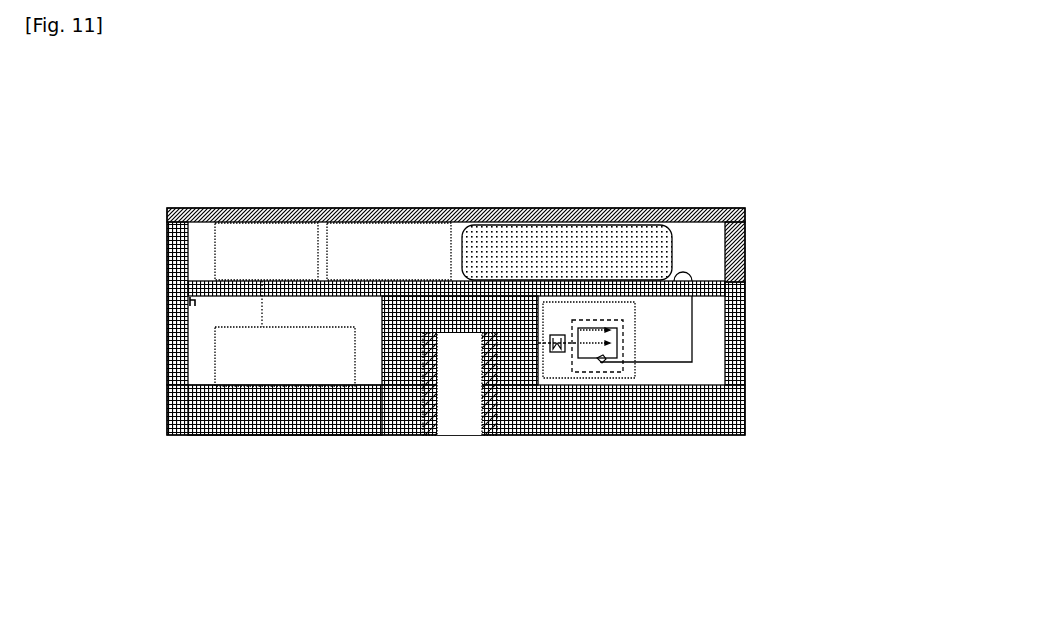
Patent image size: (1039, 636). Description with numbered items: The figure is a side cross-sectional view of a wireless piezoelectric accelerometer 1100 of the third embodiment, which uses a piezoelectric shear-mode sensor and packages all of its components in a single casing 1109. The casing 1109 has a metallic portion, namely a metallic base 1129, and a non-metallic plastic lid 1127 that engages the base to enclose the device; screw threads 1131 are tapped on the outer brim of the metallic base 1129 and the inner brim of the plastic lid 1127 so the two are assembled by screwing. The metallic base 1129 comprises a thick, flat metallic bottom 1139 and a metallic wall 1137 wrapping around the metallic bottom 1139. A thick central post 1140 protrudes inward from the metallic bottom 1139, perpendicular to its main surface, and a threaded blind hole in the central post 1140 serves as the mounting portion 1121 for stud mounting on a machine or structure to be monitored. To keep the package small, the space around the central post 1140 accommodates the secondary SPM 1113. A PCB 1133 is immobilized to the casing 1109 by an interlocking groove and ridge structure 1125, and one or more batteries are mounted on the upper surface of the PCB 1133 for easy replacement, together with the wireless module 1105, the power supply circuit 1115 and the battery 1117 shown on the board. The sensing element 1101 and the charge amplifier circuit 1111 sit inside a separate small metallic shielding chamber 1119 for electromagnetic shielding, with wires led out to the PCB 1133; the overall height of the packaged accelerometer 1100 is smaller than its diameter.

The wireless piezoelectric accelerometer 1100 is at (440, 613).
The casing 1109 is at (554, 252).
The plastic lid 1127 is at (170, 212).
The interlocking groove and ridge structure 1125 is at (197, 270).
The screw threads 1131 is at (720, 229).
The metallic wall 1137 is at (745, 405).
The metallic base 1129 is at (745, 432).
The metallic bottom 1139 is at (275, 405).
The central post 1140 is at (408, 368).
The mounting portion 1121 is at (463, 384).
The wireless module 1105 is at (263, 225).
The power supply circuit 1115 is at (397, 225).
The battery 1117 is at (567, 252).
The PCB 1133 is at (646, 224).
The secondary SPM 1113 is at (213, 350).
The sensing element 1101 is at (556, 354).
The charge amplifier circuit 1111 is at (604, 404).
The shielding chamber 1119 is at (636, 370).